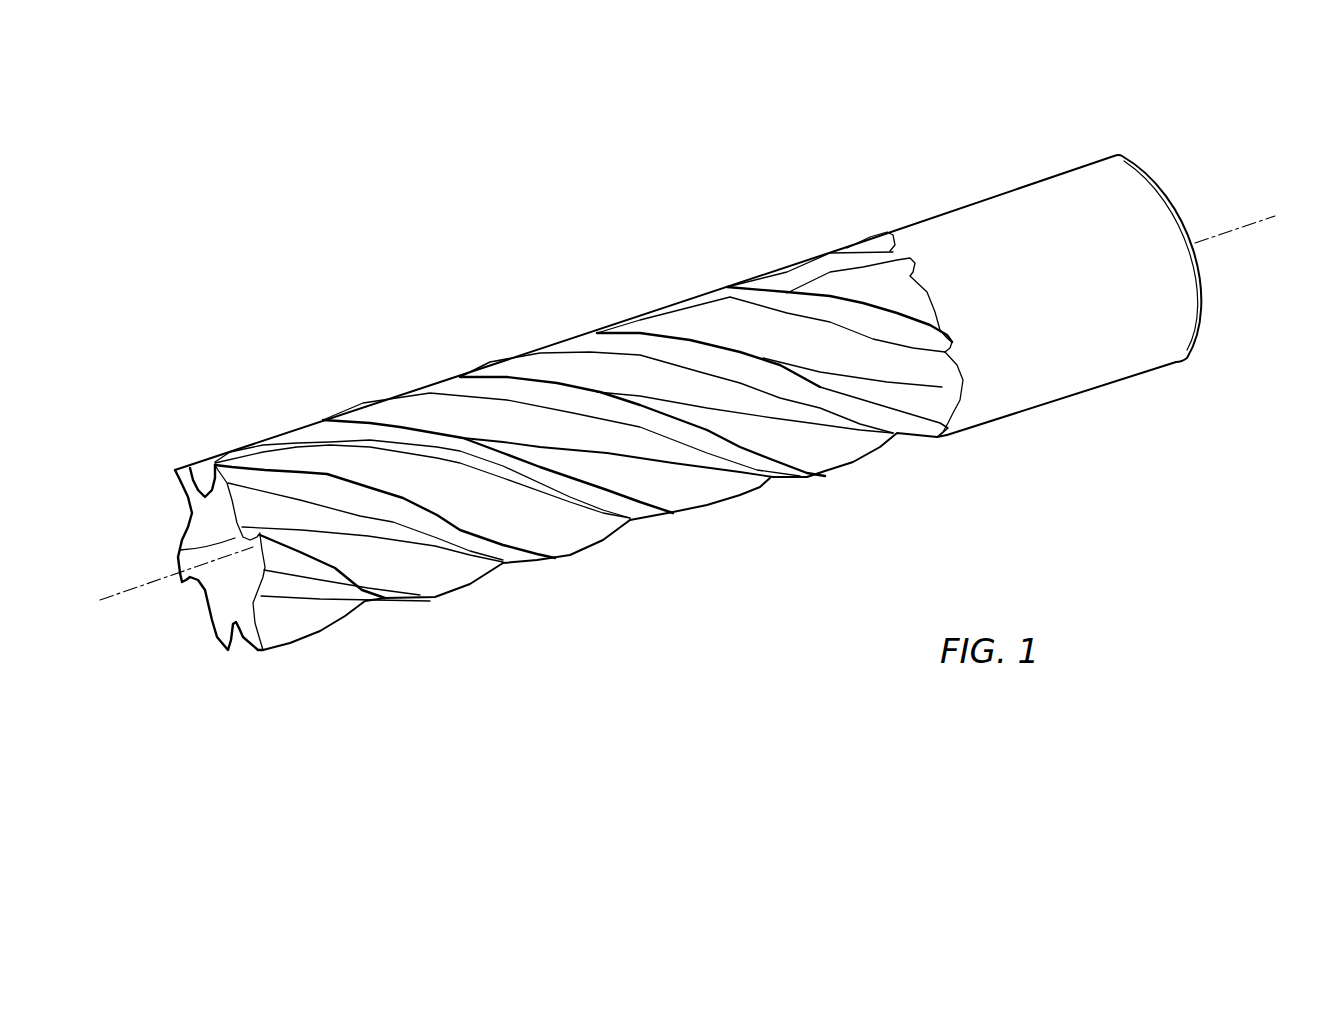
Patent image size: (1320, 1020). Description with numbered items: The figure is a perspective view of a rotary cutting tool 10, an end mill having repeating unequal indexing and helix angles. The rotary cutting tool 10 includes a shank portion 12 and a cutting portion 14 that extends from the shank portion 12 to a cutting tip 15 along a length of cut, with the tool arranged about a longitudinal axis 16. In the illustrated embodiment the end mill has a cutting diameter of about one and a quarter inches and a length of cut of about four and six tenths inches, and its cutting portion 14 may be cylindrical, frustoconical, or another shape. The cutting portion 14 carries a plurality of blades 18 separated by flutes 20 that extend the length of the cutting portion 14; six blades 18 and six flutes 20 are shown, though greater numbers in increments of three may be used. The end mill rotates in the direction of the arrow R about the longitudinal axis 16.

The rotary cutting tool 10 is at (276, 178).
The shank portion 12 is at (934, 187).
The cutting portion 14 is at (446, 334).
The cutting tip 15 is at (181, 548).
The longitudinal axis 16 is at (1244, 216).
The blades 18 is at (176, 467).
The flutes 20 is at (181, 509).